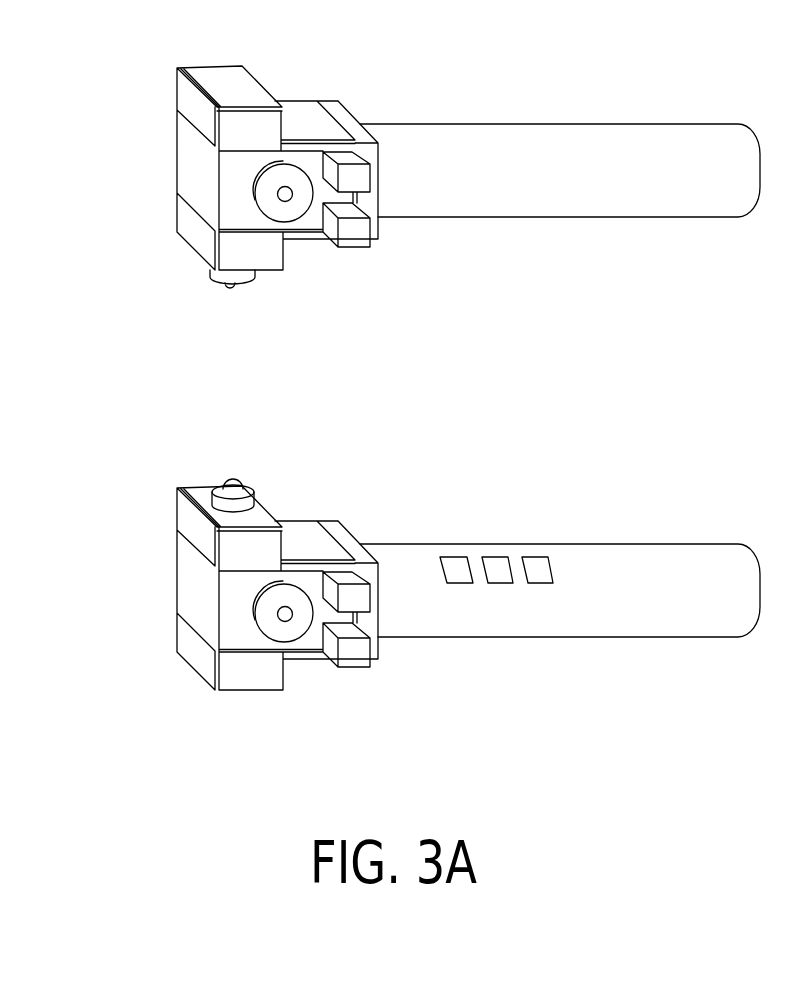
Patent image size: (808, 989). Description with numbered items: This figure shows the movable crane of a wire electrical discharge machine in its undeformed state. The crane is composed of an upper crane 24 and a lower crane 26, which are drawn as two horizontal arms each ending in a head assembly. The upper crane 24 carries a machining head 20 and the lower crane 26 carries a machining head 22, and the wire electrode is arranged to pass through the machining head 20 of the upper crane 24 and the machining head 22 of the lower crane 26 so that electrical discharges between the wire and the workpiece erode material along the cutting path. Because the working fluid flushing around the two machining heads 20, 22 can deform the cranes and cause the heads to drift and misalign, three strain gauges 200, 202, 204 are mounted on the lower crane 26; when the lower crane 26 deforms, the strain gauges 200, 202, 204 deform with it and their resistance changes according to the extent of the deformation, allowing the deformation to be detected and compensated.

The machining head 20 is at (232, 482).
The machining head 22 is at (227, 287).
The upper crane 24 is at (563, 145).
The lower crane 26 is at (678, 557).
The strain gauge 200 is at (535, 557).
The strain gauge 202 is at (492, 562).
The strain gauge 204 is at (457, 562).